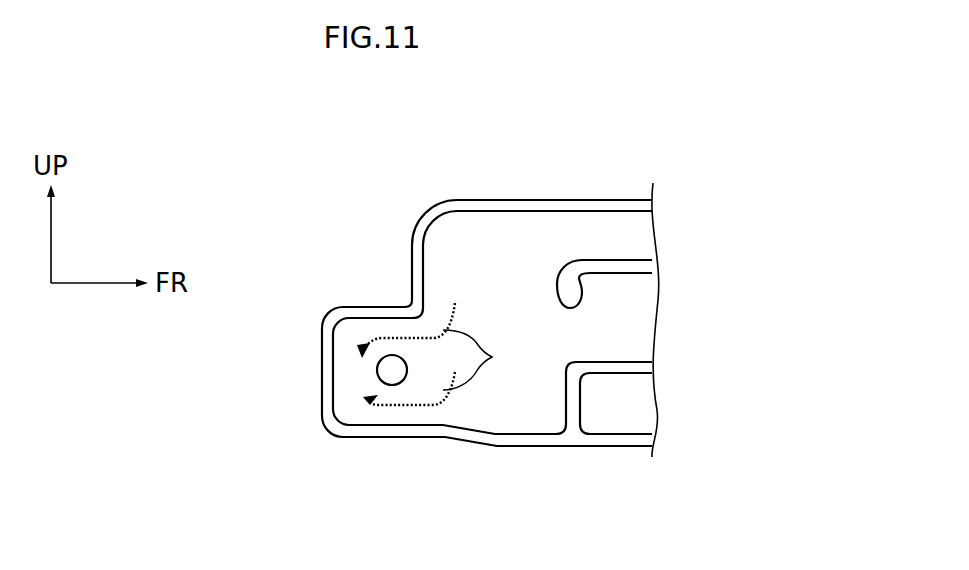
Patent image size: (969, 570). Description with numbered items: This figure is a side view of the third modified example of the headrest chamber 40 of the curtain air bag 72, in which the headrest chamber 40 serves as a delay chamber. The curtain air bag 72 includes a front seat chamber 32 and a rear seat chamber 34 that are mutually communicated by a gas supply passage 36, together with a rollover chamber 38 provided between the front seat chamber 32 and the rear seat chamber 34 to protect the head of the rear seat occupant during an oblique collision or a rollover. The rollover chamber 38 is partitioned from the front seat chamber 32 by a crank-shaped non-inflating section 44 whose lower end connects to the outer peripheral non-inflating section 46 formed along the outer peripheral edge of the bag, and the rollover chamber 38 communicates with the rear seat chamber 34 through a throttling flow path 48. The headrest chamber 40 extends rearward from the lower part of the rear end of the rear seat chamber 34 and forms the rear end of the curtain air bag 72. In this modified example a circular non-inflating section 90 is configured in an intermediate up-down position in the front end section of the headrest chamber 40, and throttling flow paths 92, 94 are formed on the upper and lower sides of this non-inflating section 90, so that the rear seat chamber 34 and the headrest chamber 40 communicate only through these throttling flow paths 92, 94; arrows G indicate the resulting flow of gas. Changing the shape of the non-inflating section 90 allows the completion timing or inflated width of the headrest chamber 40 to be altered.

The front seat chamber 32 is at (617, 423).
The rear seat chamber 34 is at (503, 252).
The gas supply passage 36 is at (612, 225).
The rollover chamber 38 is at (645, 297).
The headrest chamber 40 is at (345, 373).
The non-inflating section 44 is at (632, 360).
The outer peripheral non-inflating section 46 is at (437, 218).
The throttling flow path 48 is at (573, 327).
The curtain air bag 72 is at (503, 447).
The circular non-inflating section 90 is at (388, 355).
The throttling flow path 92 is at (405, 328).
The throttling flow path 94 is at (404, 416).
The arrows G is at (437, 354).